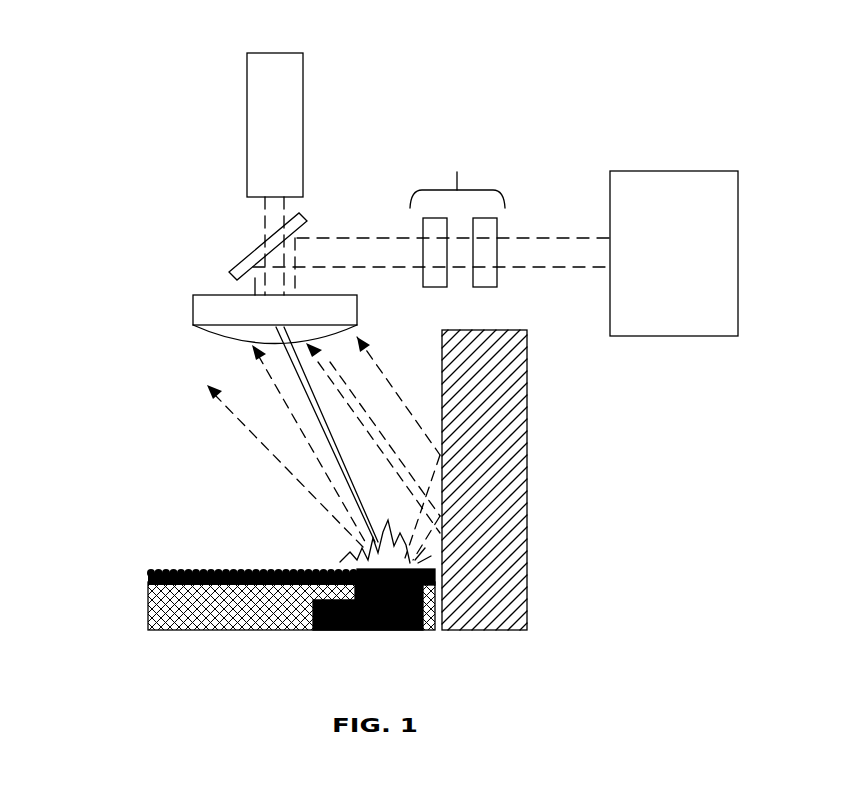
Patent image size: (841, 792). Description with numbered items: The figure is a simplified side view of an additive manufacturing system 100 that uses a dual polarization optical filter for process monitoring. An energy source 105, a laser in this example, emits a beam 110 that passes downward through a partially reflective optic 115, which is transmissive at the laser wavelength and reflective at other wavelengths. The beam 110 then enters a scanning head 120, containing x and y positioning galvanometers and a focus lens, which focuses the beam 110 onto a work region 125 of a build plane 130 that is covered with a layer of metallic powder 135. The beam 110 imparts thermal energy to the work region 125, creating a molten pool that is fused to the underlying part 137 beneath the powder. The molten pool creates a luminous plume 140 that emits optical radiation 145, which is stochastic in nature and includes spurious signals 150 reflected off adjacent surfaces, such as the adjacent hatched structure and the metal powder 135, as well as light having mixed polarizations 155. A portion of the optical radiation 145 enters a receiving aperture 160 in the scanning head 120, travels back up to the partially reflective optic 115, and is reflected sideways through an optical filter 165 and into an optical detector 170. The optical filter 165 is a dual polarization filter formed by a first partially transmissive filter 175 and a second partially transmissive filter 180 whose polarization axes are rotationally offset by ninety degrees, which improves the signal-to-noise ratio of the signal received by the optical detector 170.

The additive manufacturing system 100 is at (101, 46).
The energy source 105 is at (257, 98).
The beam 110 is at (268, 222).
The partially reflective optic 115 is at (232, 272).
The scanning head 120 is at (203, 312).
The work region 125 is at (360, 568).
The build plane 130 is at (150, 580).
The metallic powder 135 is at (222, 568).
The underlying part 137 is at (355, 620).
The luminous plume 140 is at (356, 545).
The optical radiation 145 is at (208, 430).
The spurious signals 150 is at (378, 356).
The light having mixed polarizations 155 is at (262, 372).
The receiving aperture 160 is at (297, 290).
The optical filter 165 is at (457, 176).
The optical detector 170 is at (650, 182).
The first partially transmissive filter 175 is at (430, 232).
The second partially transmissive filter 180 is at (483, 277).